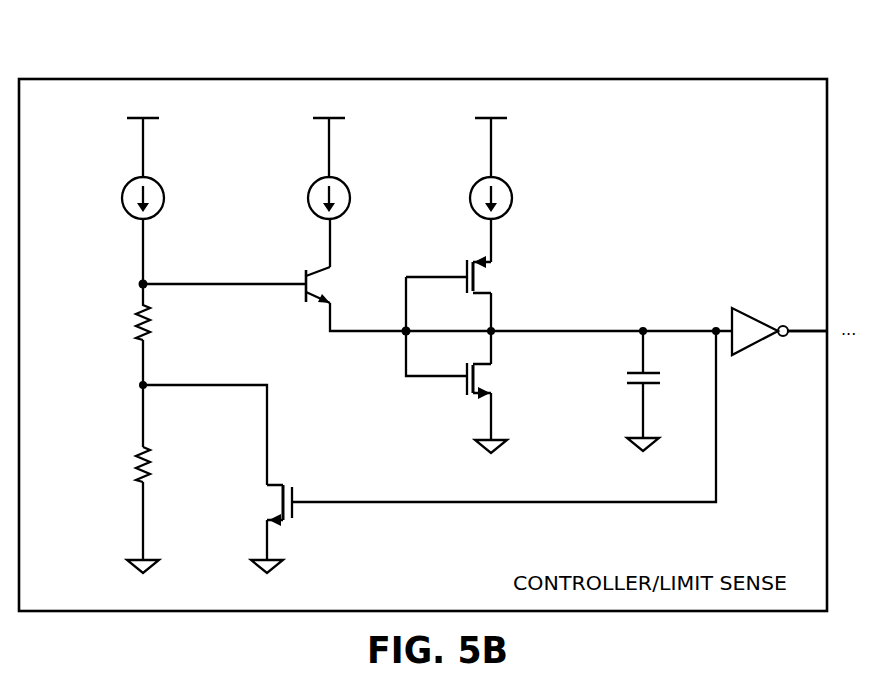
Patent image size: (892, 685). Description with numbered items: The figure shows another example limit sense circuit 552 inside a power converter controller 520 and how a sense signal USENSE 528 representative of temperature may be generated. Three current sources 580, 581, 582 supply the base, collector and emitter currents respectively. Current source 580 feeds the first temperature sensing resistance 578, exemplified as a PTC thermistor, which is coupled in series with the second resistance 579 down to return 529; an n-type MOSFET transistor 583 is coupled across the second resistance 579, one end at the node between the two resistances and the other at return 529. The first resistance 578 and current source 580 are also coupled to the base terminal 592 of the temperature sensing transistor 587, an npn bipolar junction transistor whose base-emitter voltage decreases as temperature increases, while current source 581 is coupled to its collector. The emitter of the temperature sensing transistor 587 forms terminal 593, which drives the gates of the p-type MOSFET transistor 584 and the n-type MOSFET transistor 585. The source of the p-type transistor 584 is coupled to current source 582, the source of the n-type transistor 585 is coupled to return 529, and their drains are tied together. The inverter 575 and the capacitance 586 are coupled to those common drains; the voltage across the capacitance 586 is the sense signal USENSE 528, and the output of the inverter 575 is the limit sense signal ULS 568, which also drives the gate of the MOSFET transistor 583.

The controller 520 is at (423, 316).
The limit sense circuit 552 is at (140, 66).
The current source 580 is at (198, 176).
The current source 581 is at (356, 188).
The current source 582 is at (512, 179).
The transistor Q2 587 is at (304, 305).
The transistor Q3 584 is at (527, 274).
The transistor Q4 585 is at (465, 402).
The transistor Q1 583 is at (232, 485).
The resistance R1 578 is at (83, 309).
The resistance R2 579 is at (92, 451).
The terminal 592 is at (130, 281).
The terminal 593 is at (392, 344).
The inverter 575 is at (737, 304).
The limit sense signal ULS 568 is at (788, 294).
The capacitance 586 is at (657, 387).
The sense signal USENSE 528 is at (578, 401).
The return 529 is at (155, 572).